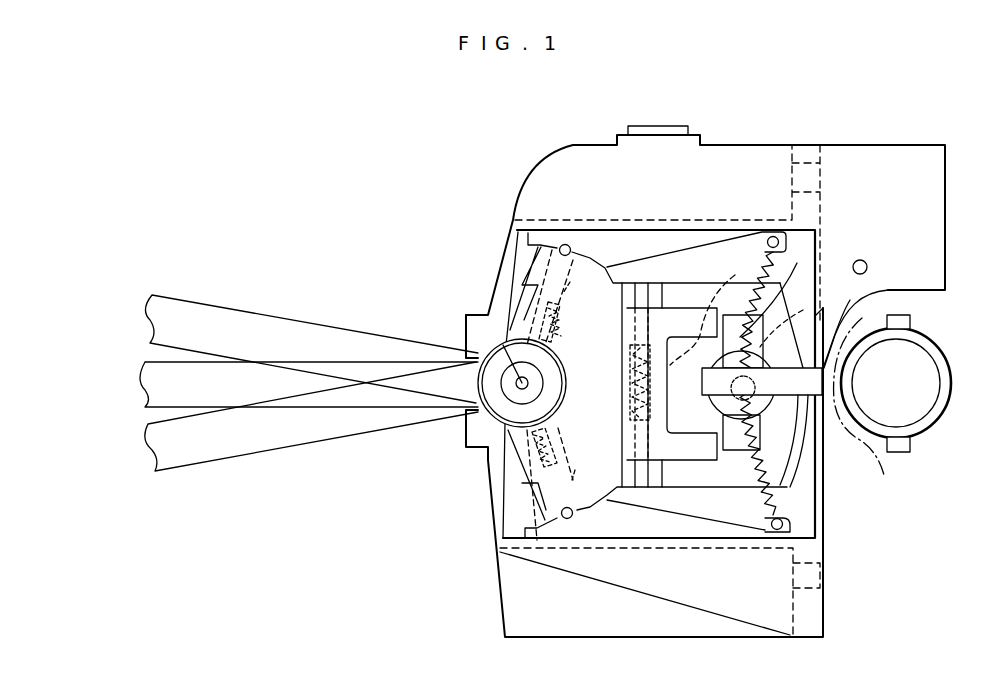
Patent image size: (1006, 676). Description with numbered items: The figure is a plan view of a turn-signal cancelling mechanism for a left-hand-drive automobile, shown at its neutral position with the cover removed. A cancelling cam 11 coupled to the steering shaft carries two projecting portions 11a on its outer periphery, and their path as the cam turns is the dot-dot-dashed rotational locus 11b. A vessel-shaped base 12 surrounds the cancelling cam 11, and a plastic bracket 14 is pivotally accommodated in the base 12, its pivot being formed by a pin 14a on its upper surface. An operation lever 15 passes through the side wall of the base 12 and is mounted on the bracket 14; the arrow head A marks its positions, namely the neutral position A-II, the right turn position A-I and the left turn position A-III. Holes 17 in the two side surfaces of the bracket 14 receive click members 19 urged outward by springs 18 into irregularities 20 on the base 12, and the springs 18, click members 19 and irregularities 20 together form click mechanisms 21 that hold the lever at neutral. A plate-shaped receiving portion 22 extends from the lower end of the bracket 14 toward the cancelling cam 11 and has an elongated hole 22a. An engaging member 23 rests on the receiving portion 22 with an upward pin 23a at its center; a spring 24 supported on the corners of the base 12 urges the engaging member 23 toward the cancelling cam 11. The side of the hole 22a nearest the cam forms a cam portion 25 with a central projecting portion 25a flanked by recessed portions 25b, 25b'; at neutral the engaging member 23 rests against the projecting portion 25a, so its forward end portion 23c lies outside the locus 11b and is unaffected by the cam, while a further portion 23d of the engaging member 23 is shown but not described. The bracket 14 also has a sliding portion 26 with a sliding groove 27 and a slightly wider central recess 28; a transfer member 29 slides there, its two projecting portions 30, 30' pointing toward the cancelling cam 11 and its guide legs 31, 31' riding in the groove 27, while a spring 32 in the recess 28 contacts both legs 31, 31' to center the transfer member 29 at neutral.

The cancelling cam 11 is at (951, 360).
The projecting portion 11a is at (912, 318).
The rotational locus 11b is at (884, 475).
The base 12 is at (492, 487).
The bracket 14 is at (523, 245).
The pin 14a is at (466, 333).
The operation lever 15 is at (348, 400).
The hole 17 is at (533, 565).
The spring 18 is at (560, 333).
The click member 19 is at (570, 282).
The irregularities 20 is at (565, 244).
The click mechanism 21 is at (528, 245).
The receiving portion 22 is at (815, 455).
The elongated hole 22a is at (740, 500).
The engaging member 23 is at (833, 322).
The pin 23a is at (744, 382).
The forward end portion 23c is at (888, 292).
The arm lower portion 23d is at (780, 470).
The spring 24 is at (706, 300).
The cam portion 25 is at (723, 422).
The projecting portion 25a is at (861, 255).
The recessed portion 25b is at (818, 513).
The spring hook 25b' is at (820, 247).
The sliding portion 26 is at (648, 300).
The sliding groove 27 is at (635, 300).
The recess 28 is at (622, 385).
The transfer member 29 is at (727, 275).
The projecting portion 30 is at (698, 465).
The projecting portion 30' is at (702, 279).
The guide leg 31 is at (621, 416).
The guide leg 31' is at (612, 343).
The spring 32 is at (758, 268).
The arrow head A is at (243, 300).
The right turn position A-I is at (150, 315).
The neutral position A-II is at (145, 385).
The left turn position A-III is at (150, 448).